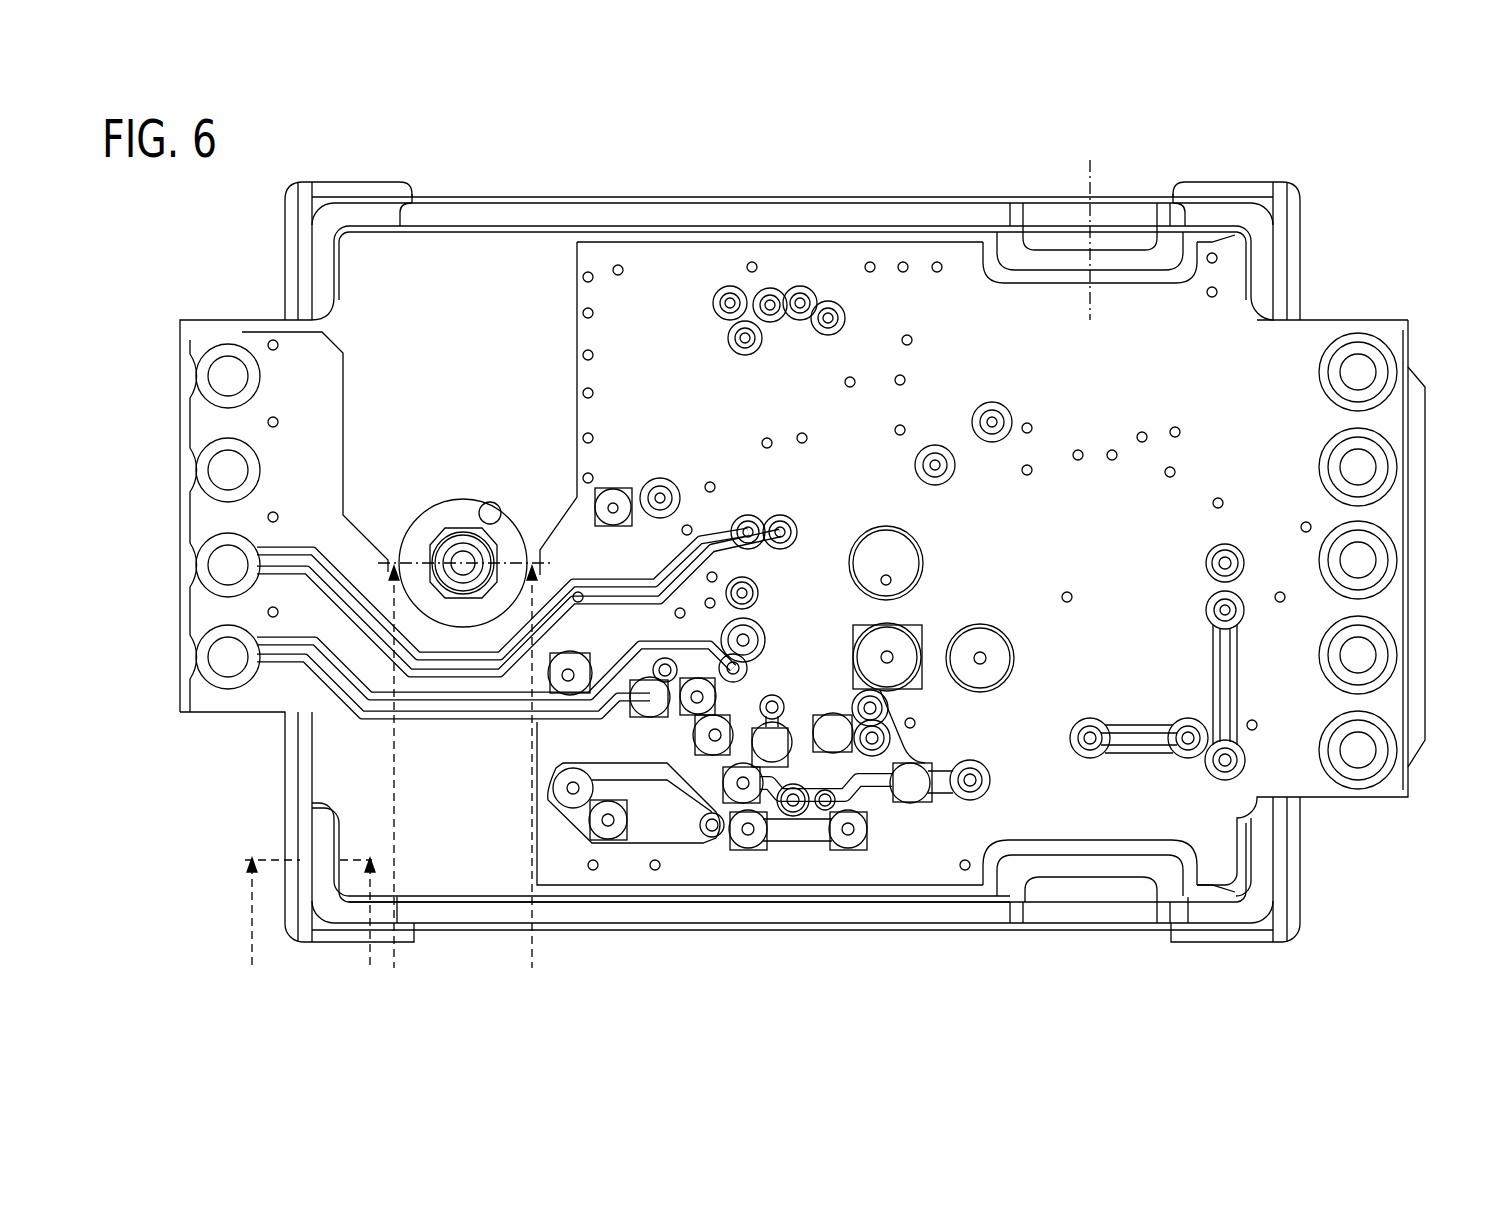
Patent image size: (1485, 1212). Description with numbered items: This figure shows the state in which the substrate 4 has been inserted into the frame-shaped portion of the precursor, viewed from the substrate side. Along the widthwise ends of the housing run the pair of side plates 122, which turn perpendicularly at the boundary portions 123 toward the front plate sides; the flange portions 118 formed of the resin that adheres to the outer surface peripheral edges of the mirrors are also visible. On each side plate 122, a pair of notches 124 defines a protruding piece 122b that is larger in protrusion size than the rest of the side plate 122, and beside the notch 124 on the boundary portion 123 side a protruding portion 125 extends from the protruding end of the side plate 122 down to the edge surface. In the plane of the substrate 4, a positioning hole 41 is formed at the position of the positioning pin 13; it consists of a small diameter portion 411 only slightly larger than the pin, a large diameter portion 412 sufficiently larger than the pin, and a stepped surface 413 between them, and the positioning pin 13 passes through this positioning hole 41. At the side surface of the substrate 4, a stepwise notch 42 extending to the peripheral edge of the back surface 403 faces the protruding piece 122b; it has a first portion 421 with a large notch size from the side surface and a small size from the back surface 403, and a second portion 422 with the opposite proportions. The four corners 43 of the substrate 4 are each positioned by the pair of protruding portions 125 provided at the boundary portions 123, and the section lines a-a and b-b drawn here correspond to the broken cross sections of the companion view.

The substrate 4 is at (1414, 328).
The positioning pin 13 is at (447, 590).
The positioning hole 41 is at (476, 370).
The small diameter portion 411 is at (440, 557).
The large diameter portion 412 is at (497, 523).
The stepped surface 413 is at (456, 517).
The notch 42 is at (1081, 935).
The first portion 421 is at (1012, 860).
The second portion 422 is at (1063, 880).
The back surface 403 is at (1090, 847).
The corners 43 is at (363, 257).
The flange portion 118 is at (1292, 830).
The side plate 122 is at (770, 197).
The protruding piece 122b is at (1064, 215).
The boundary portion 123 is at (320, 236).
The notch 124 is at (1014, 215).
The protruding portion 125 is at (400, 226).